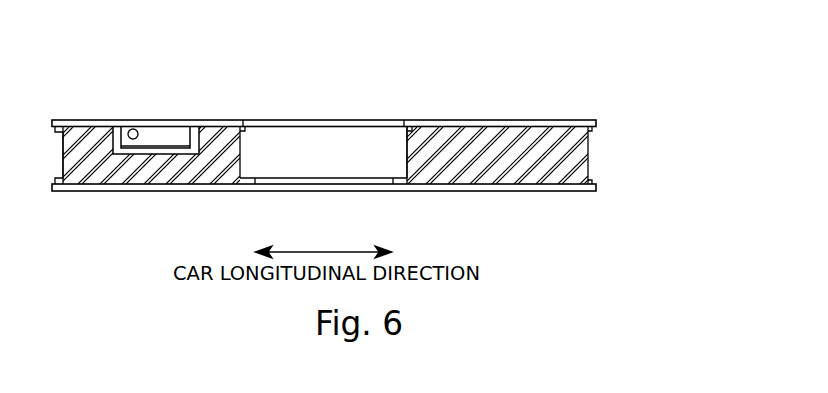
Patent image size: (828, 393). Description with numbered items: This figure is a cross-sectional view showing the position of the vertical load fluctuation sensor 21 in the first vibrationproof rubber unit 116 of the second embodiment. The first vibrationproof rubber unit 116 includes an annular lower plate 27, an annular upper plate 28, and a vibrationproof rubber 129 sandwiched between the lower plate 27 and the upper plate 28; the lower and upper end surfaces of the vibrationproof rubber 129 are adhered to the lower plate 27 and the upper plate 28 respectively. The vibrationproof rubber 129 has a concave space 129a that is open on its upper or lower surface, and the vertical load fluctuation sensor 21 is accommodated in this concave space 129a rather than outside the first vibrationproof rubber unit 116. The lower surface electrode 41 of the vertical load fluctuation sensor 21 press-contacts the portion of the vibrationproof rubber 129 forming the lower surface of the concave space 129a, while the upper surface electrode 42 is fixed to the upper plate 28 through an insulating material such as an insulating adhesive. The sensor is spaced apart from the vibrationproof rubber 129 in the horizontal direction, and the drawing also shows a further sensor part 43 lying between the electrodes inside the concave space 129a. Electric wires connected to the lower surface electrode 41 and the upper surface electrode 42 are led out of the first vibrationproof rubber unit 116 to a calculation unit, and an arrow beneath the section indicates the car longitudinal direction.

The vertical load fluctuation sensor 21 is at (210, 53).
The lower plate 27 is at (590, 191).
The upper plate 28 is at (590, 120).
The lower surface electrode 41 is at (189, 145).
The upper surface electrode 42 is at (133, 129).
The sensor substrate 43 is at (161, 146).
The first vibrationproof rubber unit 116 is at (698, 100).
The vibrationproof rubber 129 is at (572, 155).
The concave space 129a is at (116, 124).